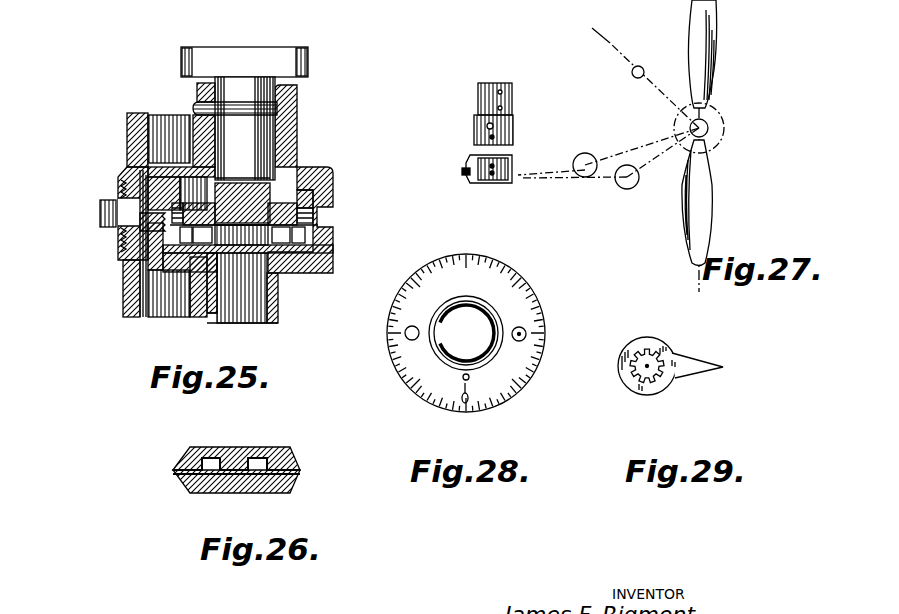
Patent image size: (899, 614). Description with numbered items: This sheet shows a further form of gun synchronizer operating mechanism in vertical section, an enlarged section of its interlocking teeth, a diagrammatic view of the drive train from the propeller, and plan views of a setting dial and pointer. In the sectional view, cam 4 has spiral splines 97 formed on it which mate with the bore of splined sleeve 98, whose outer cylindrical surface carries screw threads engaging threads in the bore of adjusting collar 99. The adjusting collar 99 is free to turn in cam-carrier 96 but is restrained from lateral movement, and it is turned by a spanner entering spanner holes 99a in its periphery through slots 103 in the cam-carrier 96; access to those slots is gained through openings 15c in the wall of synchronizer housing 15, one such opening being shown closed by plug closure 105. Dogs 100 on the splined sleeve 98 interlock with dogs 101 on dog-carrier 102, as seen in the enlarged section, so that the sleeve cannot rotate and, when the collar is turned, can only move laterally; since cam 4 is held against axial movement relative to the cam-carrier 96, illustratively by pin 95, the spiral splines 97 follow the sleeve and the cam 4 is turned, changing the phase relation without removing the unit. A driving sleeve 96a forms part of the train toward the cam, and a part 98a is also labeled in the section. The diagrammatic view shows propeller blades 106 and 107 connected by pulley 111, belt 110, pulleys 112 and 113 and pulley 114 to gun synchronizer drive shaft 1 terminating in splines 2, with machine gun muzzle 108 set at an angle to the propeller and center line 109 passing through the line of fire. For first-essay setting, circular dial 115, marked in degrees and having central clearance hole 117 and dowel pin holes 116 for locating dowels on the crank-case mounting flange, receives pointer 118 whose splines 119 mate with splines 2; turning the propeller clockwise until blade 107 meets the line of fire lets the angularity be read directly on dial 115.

In FIG. 27, the gun synchronizer drive shaft 1 is at (514, 126).
In FIG. 27, the splines 2 is at (514, 98).
In FIG. 25, the cam 4 is at (280, 62).
In FIG. 25, the synchronizer housing 15 is at (135, 137).
In FIG. 25, the openings 15c is at (119, 177).
In FIG. 25, the pin 95 is at (203, 108).
In FIG. 25, the cam-carrier 96 is at (285, 117).
In FIG. 25, the driving sleeve 96a is at (208, 310).
In FIG. 25, the spiral splines 97 is at (277, 197).
In FIG. 25, the splined sleeve 98 is at (287, 203).
In FIG. 25, the stop 98a is at (125, 210).
In FIG. 25, the adjusting collar 99 is at (320, 218).
In FIG. 25, the spanner holes 99a is at (150, 248).
In FIG. 25, the dogs 100 is at (332, 237).
In FIG. 26, the dogs 100 is at (233, 462).
In FIG. 25, the dogs 101 is at (285, 247).
In FIG. 26, the dogs 101 is at (213, 467).
In FIG. 25, the dog-carrier 102 is at (333, 249).
In FIG. 25, the slots 103 is at (318, 216).
In FIG. 25, the plug closure 105 is at (150, 228).
In FIG. 27, the propeller blade 106 is at (712, 37).
In FIG. 27, the propeller blade 107 is at (705, 207).
In FIG. 27, the machine gun muzzle 108 is at (650, 57).
In FIG. 27, the center line 109 is at (607, 43).
In FIG. 27, the belt 110 is at (650, 138).
In FIG. 27, the pulley 111 is at (708, 128).
In FIG. 27, the pulley 112 is at (625, 182).
In FIG. 27, the pulley 113 is at (586, 163).
In FIG. 27, the pulley 114 is at (517, 170).
In FIG. 28, the circular dial 115 is at (533, 294).
In FIG. 28, the dowel pin holes 116 is at (524, 331).
In FIG. 28, the central clearance hole 117 is at (466, 333).
In FIG. 29, the pointer 118 is at (678, 351).
In FIG. 29, the splines 119 is at (645, 368).